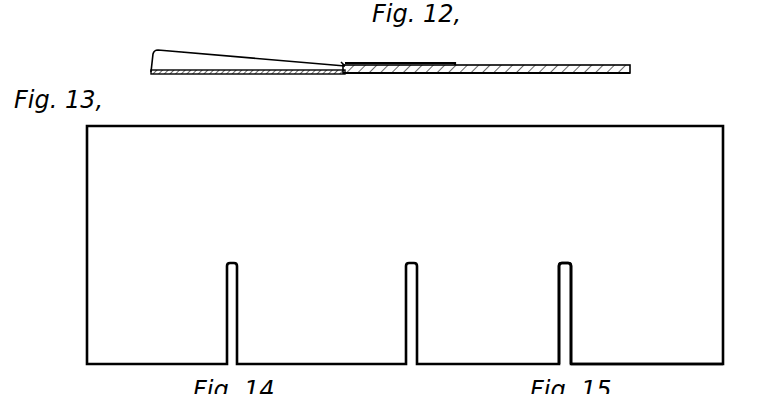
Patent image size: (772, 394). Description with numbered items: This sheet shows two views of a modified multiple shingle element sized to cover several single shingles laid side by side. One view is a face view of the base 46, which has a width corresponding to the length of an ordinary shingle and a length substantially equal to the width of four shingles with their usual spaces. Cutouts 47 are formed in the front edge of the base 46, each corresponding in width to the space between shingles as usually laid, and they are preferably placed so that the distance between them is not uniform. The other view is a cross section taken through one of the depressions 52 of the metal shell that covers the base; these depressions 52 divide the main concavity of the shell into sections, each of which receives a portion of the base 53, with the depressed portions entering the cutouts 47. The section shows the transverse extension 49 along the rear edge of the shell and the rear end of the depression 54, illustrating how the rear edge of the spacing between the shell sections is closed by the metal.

In FIG. 12, the base 46 is at (585, 66).
In FIG. 13, the base 46 is at (687, 136).
In FIG. 13, the cutouts 47 is at (565, 296).
In FIG. 12, the transverse extension 49 is at (372, 65).
In FIG. 12, the depressions 52 is at (218, 61).
In FIG. 13, the portion of the base 53 is at (646, 340).
In FIG. 12, the rear end of the depression 54 is at (346, 64).